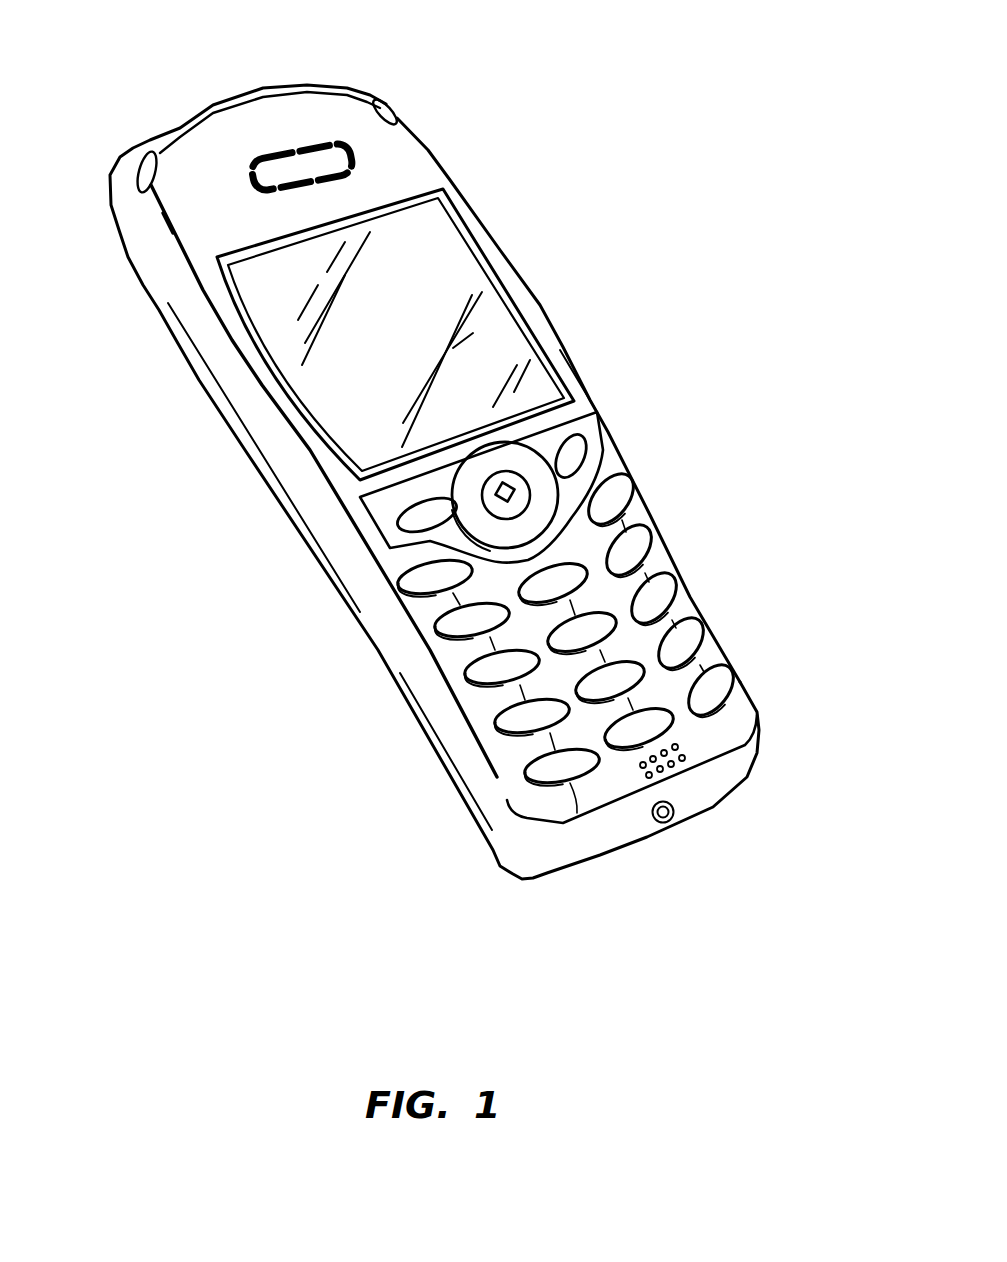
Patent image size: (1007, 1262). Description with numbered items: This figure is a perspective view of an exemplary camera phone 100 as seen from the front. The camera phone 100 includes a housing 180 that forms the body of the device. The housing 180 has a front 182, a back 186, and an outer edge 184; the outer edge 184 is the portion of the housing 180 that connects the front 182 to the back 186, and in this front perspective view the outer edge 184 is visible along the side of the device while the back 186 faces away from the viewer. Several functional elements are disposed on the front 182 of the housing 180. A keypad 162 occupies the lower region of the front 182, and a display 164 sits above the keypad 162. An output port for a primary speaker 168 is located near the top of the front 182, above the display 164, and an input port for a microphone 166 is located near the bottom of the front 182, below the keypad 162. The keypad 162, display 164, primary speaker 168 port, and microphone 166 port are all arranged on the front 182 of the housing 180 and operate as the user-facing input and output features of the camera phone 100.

The camera phone 100 is at (728, 173).
The keypad 162 is at (704, 525).
The display 164 is at (327, 388).
The microphone 166 is at (683, 757).
The primary speaker 168 is at (307, 167).
The housing 180 is at (283, 621).
The front 182 is at (215, 167).
The outer edge 184 is at (470, 765).
The back 186 is at (597, 400).